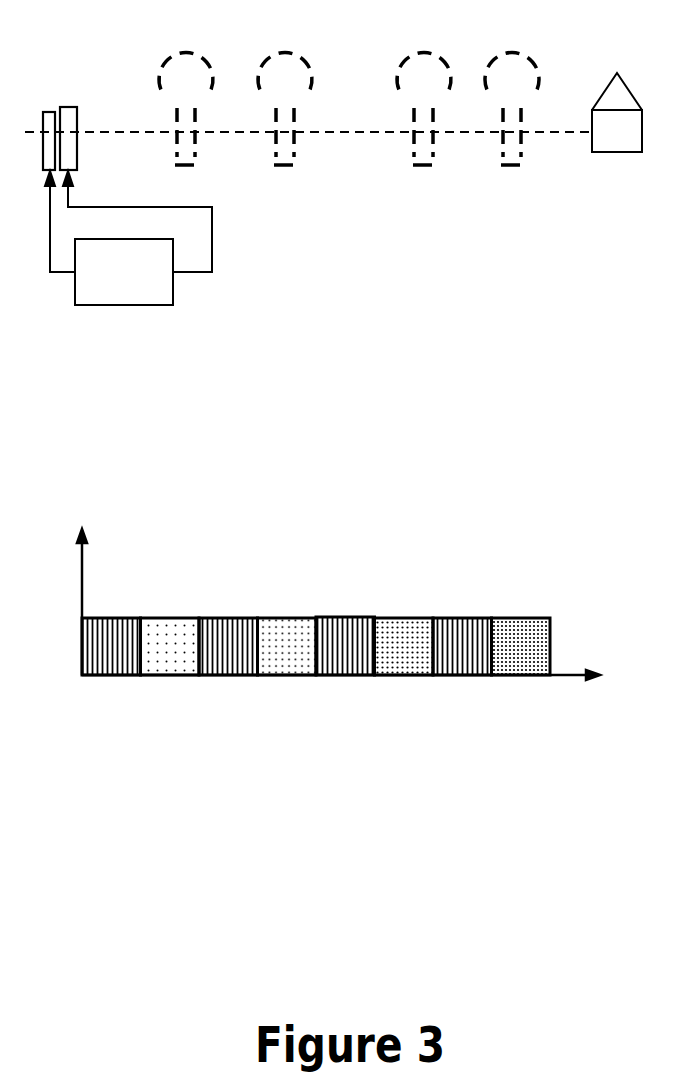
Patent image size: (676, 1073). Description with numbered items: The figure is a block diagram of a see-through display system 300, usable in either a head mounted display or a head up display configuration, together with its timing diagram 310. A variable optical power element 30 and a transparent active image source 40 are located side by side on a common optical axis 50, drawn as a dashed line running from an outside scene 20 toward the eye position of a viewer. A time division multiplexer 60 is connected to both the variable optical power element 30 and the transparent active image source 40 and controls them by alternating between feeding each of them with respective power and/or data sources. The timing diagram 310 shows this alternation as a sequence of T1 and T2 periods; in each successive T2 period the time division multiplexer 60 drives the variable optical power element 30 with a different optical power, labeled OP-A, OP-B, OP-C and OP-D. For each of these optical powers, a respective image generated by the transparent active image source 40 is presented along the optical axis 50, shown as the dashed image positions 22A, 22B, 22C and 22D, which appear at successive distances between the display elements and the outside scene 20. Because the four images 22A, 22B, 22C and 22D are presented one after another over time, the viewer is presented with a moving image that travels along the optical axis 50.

The outside scene 20 is at (594, 98).
The presented image at optical power OP-A 22A is at (161, 73).
The presented image at optical power OP-B 22B is at (260, 73).
The presented image at optical power OP-C 22C is at (399, 73).
The presented image at optical power OP-D 22D is at (487, 73).
The variable optical power element 30 is at (46, 112).
The transparent active image source 40 is at (77, 117).
The common optical axis 50 is at (313, 133).
The time division multiplexer 60 is at (122, 305).
The see-through display system 300 is at (409, 238).
The timing diagram 310 is at (299, 588).